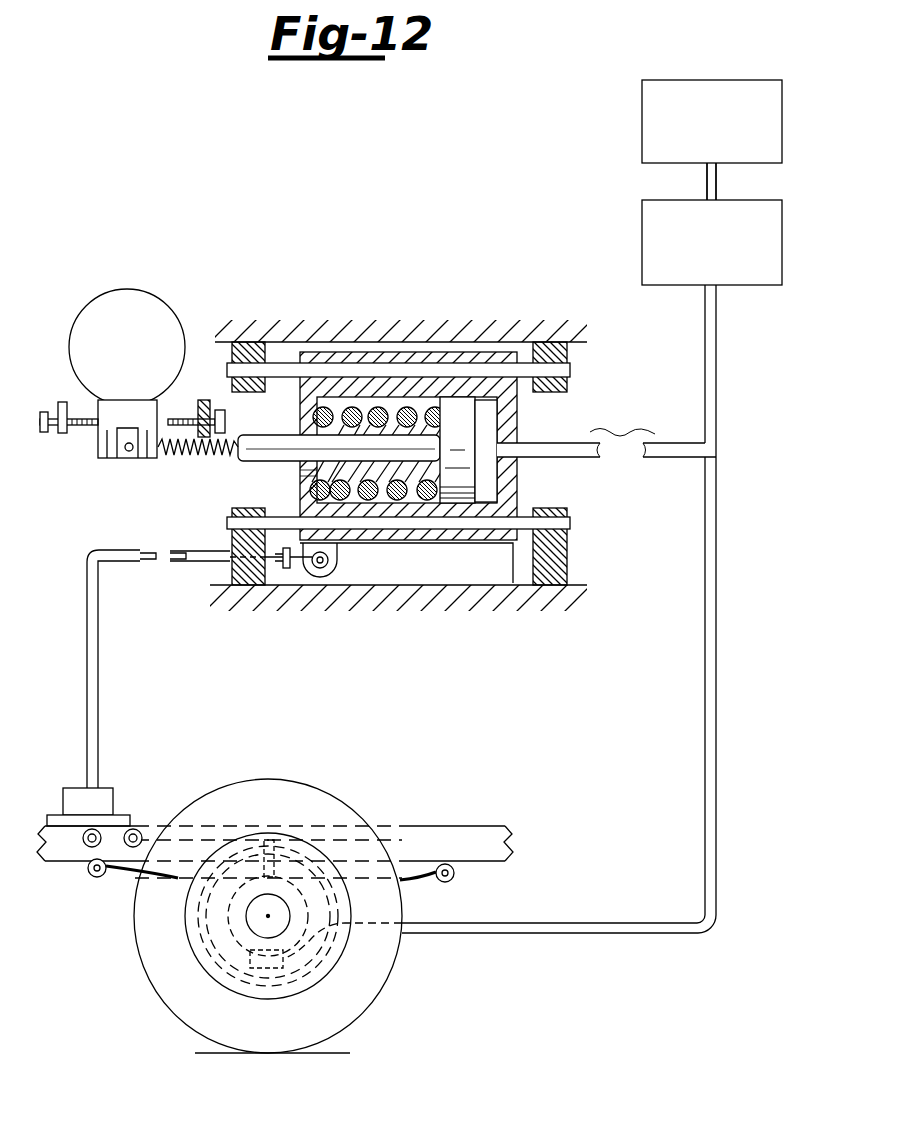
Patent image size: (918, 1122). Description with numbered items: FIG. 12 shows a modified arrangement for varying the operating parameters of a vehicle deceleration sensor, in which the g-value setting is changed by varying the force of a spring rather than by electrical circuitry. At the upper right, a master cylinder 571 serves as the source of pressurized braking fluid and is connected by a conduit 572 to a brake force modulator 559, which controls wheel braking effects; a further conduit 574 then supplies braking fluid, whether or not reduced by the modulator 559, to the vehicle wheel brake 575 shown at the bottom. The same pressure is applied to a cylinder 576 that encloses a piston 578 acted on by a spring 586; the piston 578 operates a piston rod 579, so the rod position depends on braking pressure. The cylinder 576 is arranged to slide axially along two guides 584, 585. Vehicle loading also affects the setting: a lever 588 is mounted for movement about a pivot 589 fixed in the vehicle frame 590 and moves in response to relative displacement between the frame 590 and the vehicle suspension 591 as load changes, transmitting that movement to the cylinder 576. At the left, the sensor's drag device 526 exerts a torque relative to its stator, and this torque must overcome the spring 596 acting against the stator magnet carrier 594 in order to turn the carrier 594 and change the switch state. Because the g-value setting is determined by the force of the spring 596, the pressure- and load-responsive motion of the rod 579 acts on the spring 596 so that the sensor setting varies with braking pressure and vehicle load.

The drag device 526 is at (147, 289).
The stator magnet carrier 594 is at (145, 413).
The spring 596 is at (198, 457).
The spring 586 is at (410, 410).
The guide 584 is at (278, 370).
The cylinder 576 is at (373, 352).
The piston rod 579 is at (288, 442).
The piston 578 is at (463, 423).
The guide 585 is at (282, 523).
The conduit 574 is at (705, 496).
The master cylinder 571 is at (642, 122).
The conduit 572 is at (707, 178).
The brake force modulator 559 is at (642, 252).
The lever 588 is at (222, 845).
The pivot 589 is at (128, 876).
The vehicle frame 590 is at (460, 826).
The vehicle suspension 591 is at (437, 880).
The vehicle wheel brake 575 is at (215, 948).